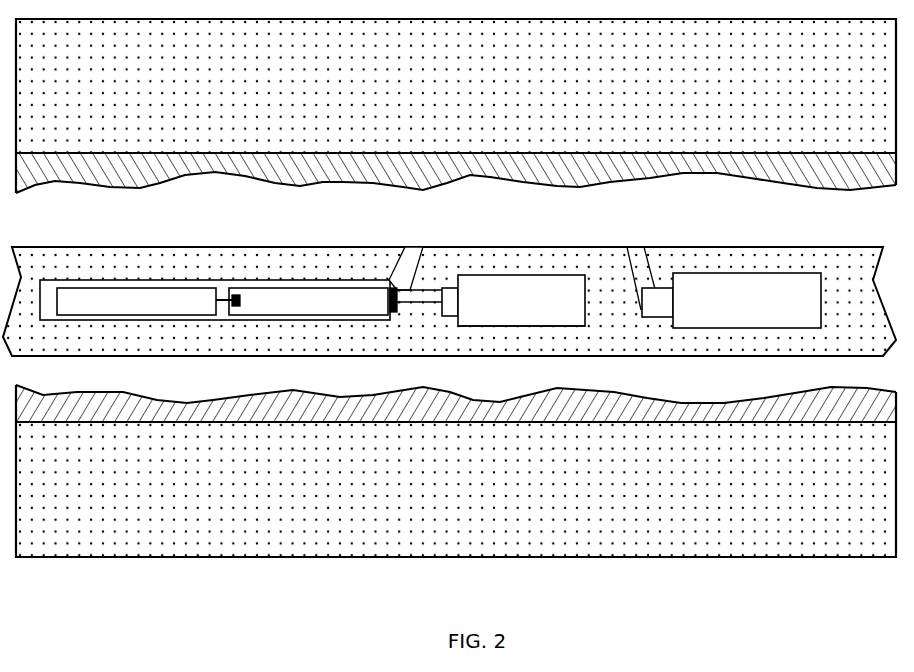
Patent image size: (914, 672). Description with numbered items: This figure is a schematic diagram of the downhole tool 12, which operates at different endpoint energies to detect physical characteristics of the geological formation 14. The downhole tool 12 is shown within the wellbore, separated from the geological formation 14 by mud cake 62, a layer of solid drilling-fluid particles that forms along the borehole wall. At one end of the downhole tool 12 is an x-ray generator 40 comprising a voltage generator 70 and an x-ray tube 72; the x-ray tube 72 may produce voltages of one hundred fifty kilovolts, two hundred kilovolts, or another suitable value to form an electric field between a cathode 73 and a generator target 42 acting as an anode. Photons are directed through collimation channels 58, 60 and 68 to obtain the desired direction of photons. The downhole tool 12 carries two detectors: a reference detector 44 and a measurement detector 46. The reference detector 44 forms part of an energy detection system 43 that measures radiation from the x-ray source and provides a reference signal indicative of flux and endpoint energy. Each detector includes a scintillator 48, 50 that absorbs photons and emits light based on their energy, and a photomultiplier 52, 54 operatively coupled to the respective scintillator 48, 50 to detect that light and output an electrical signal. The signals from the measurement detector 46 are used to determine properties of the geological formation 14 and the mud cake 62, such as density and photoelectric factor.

The downhole tool 12 is at (235, 232).
The geological formation 14 is at (456, 106).
The x-ray generator 40 is at (215, 258).
The generator target 42 is at (393, 310).
The energy detection system 43 is at (532, 345).
The reference detector 44 is at (513, 297).
The measurement detector 46 is at (718, 258).
The scintillator 48 is at (449, 298).
The scintillator 50 is at (657, 300).
The photomultiplier 52 is at (554, 283).
The photomultiplier 54 is at (792, 283).
The collimation channel 58 is at (423, 301).
The collimation channel 60 is at (403, 255).
The mud cake 62 is at (200, 410).
The collimation channel 68 is at (640, 267).
The voltage generator 70 is at (144, 289).
The x-ray tube 72 is at (342, 300).
The cathode 73 is at (232, 296).